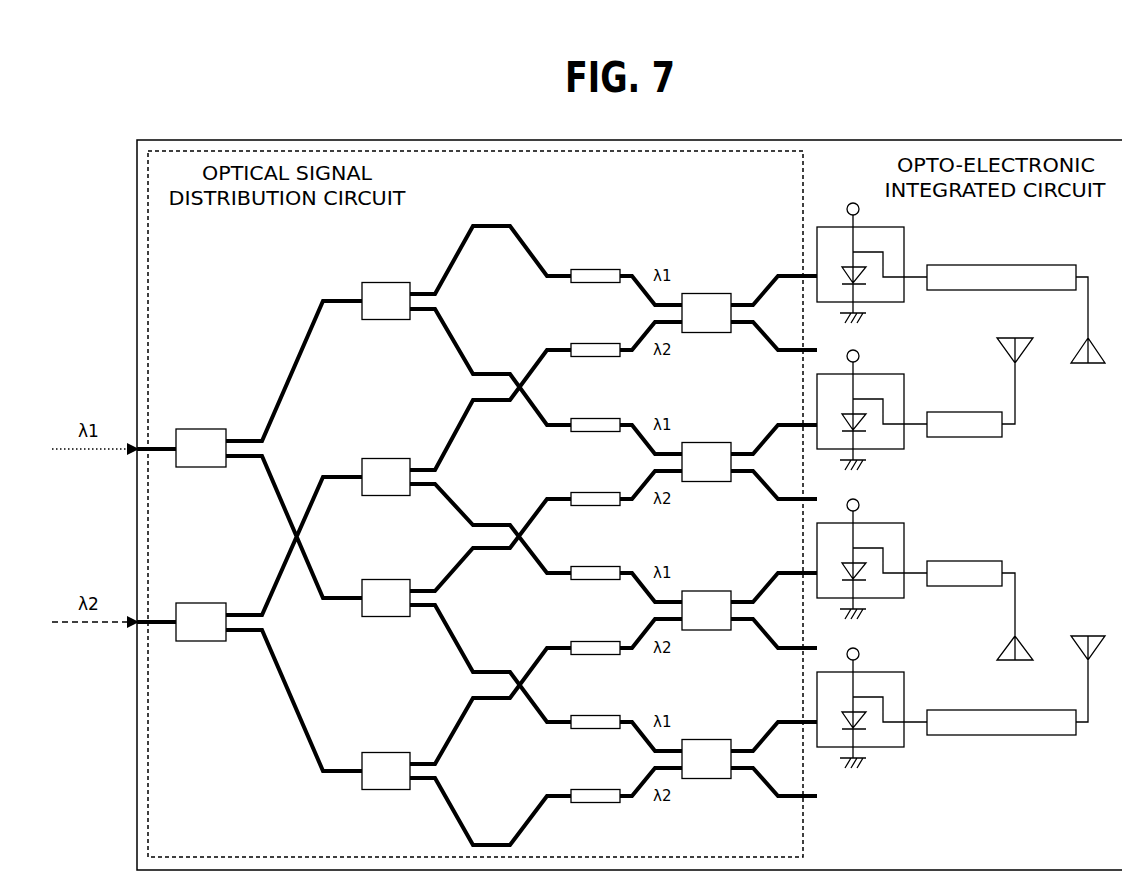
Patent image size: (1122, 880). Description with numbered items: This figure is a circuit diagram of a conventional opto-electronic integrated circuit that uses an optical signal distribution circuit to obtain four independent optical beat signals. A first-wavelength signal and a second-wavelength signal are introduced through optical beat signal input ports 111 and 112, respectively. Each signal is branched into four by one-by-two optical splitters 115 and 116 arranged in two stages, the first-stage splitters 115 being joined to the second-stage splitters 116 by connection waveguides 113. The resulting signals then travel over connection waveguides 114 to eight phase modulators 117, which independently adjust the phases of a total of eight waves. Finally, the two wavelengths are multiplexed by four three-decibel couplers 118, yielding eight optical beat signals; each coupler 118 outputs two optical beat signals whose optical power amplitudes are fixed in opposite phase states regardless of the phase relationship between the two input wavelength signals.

The optical beat signal input port 111 is at (140, 452).
The optical beat signal input port 112 is at (140, 625).
The connection waveguide 113 is at (325, 291).
The connection waveguide 114 is at (547, 224).
The 1×2 optical splitter 115 is at (262, 420).
The 1×2 optical splitter 116 is at (325, 271).
The phase modulator 117 is at (632, 263).
The 3-dB coupler 118 is at (632, 263).